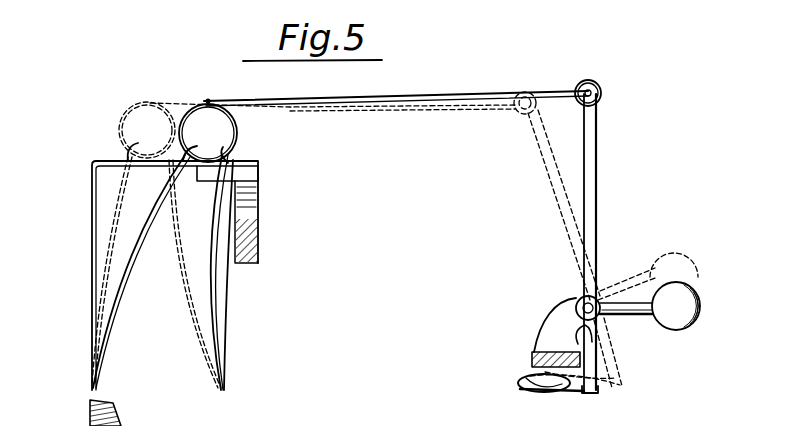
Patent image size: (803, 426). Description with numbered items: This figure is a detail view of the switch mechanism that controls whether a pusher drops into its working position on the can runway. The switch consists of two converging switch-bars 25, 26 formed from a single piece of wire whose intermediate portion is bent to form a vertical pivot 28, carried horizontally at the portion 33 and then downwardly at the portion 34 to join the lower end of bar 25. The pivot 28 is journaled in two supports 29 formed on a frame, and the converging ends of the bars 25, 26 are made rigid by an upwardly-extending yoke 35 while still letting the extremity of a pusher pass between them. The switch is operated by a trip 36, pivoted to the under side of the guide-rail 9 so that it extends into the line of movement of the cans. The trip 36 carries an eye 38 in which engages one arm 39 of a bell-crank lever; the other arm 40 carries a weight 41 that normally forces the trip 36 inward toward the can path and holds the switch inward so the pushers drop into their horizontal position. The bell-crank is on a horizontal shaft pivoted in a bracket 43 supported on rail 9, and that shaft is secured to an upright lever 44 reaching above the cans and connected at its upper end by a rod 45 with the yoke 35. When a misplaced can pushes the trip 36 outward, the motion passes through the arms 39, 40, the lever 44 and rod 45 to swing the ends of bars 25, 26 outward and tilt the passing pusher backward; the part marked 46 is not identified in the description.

The guide-rail 9 is at (530, 357).
The switch-bar 25 is at (140, 250).
The switch-bar 26 is at (215, 312).
The vertical pivot 28 is at (226, 280).
The supports 29 is at (240, 176).
The horizontal portion 33 is at (128, 178).
The downward portion 34 is at (97, 208).
The yoke 35 is at (240, 130).
The trip 36 is at (517, 386).
The eye 38 is at (597, 395).
The arm of bell-crank lever 39 is at (592, 342).
The arm of bell-crank lever 40 is at (645, 316).
The weight 41 is at (668, 264).
The bracket 43 is at (563, 313).
The upright lever 44 is at (600, 172).
The rod 45 is at (510, 108).
The bar 46 is at (393, 98).